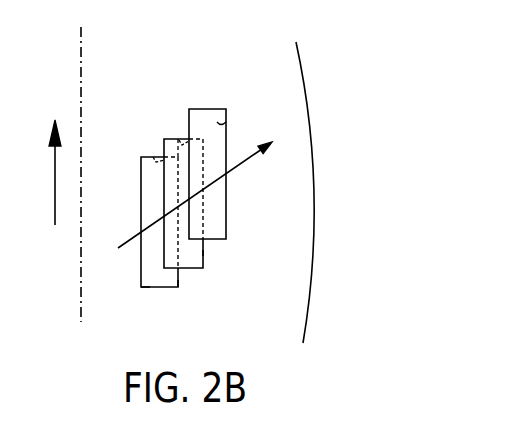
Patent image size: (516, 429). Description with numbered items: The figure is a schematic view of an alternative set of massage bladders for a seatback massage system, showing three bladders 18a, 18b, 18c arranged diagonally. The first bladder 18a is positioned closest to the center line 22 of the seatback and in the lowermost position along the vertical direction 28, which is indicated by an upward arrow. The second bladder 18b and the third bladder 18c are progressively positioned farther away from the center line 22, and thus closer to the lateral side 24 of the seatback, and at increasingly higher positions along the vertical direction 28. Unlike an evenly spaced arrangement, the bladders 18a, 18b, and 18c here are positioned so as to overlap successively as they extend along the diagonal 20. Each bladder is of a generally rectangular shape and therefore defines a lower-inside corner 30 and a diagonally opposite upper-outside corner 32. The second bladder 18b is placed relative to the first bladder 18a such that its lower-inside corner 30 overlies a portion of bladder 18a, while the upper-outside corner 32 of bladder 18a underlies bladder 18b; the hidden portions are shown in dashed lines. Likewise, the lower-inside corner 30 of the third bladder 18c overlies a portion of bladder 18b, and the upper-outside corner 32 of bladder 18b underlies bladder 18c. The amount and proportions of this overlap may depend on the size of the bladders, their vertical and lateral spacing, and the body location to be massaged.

The first bladder 18a is at (167, 288).
The second bladder 18b is at (193, 260).
The third bladder 18c is at (218, 227).
The diagonal 20 is at (252, 158).
The center line 22 is at (82, 59).
The lateral side 24 is at (305, 92).
The vertical direction 28 is at (53, 185).
The lower-inside corner 30 is at (148, 283).
The upper-outside corner 32 is at (145, 148).